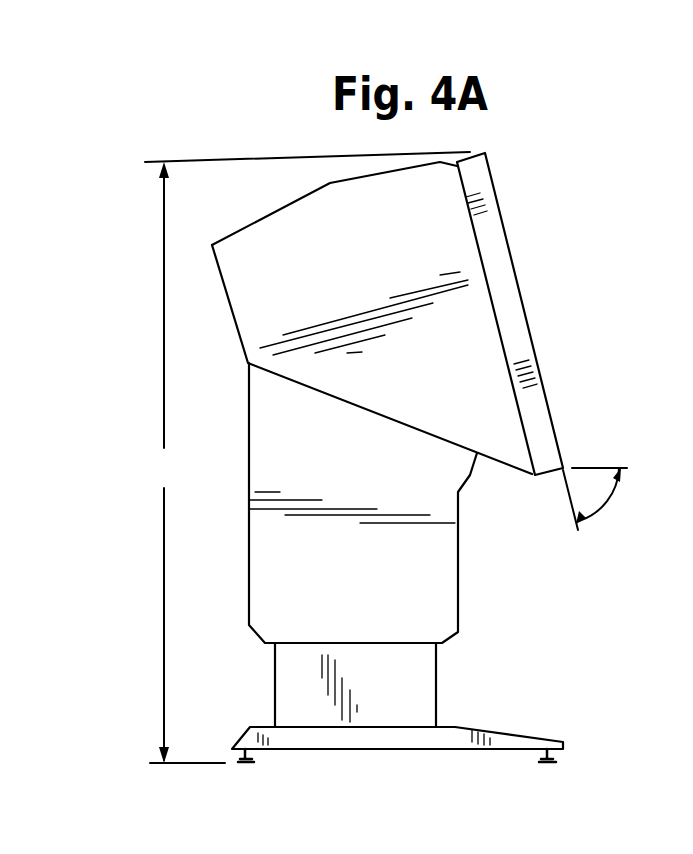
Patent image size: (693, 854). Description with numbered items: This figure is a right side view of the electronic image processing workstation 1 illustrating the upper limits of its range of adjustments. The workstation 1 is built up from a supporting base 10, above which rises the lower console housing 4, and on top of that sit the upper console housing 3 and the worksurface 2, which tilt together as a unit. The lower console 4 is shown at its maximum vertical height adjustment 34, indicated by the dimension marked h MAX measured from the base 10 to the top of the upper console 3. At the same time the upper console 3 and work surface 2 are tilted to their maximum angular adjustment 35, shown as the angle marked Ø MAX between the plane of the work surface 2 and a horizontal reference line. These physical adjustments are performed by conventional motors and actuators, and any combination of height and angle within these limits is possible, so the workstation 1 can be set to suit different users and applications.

The electronic image processing workstation 1 is at (531, 165).
The worksurface 2 is at (538, 330).
The upper console housing 3 is at (272, 311).
The lower console housing 4 is at (296, 583).
The supporting base 10 is at (363, 750).
The maximum vertical height adjustment 34 is at (138, 424).
The maximum angular adjustment 35 is at (548, 578).